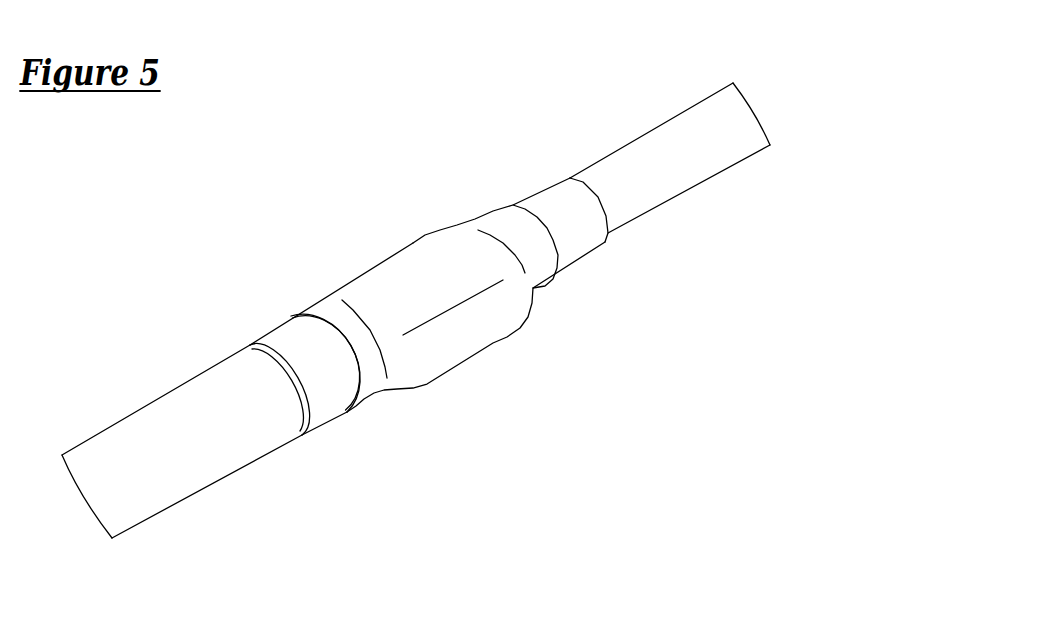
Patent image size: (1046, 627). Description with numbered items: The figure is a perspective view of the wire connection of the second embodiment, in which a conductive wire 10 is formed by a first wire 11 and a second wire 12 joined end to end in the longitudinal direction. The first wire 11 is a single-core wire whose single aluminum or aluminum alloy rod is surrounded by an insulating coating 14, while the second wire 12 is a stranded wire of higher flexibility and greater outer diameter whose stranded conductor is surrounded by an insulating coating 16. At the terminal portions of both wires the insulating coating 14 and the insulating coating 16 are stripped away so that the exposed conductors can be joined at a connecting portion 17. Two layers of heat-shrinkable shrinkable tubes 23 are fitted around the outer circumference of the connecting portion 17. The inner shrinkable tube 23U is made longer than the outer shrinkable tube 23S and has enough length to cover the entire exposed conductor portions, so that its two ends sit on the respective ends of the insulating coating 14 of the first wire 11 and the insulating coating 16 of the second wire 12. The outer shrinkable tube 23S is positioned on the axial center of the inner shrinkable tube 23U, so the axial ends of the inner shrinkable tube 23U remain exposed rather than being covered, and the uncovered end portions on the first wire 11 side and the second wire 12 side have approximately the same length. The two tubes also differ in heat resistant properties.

The conductive wire 10 is at (360, 149).
The first wire 11 is at (675, 137).
The second wire 12 is at (125, 443).
The insulating coating 14 is at (623, 165).
The insulating coating 16 is at (178, 422).
The connecting portion 17 is at (410, 268).
The shrinkable tubes 23 is at (328, 511).
The inner shrinkable tube 23U is at (332, 400).
The outer shrinkable tube 23S is at (412, 375).